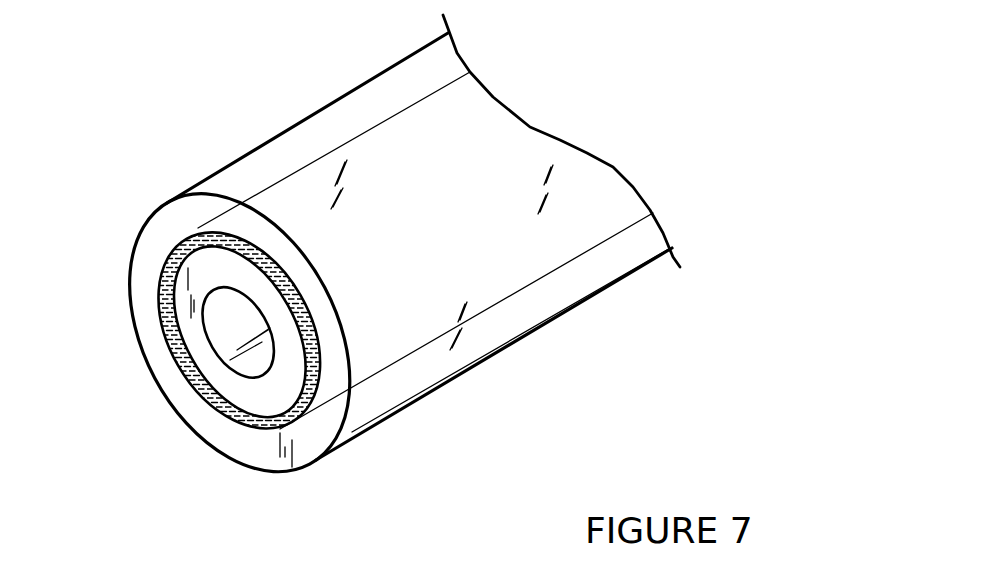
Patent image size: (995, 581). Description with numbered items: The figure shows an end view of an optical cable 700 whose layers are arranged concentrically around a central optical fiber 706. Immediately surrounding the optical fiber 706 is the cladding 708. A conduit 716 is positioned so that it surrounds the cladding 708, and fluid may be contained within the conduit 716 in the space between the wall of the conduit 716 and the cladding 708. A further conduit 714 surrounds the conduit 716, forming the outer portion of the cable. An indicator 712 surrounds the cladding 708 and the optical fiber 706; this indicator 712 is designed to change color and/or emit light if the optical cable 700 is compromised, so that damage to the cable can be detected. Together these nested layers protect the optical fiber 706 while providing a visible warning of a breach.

The tubular body 700 is at (288, 126).
The optical fiber 706 is at (227, 330).
The cladding 708 is at (210, 365).
The indicator 712 is at (160, 230).
The conduit 714 is at (133, 307).
The conduit 716 is at (222, 397).